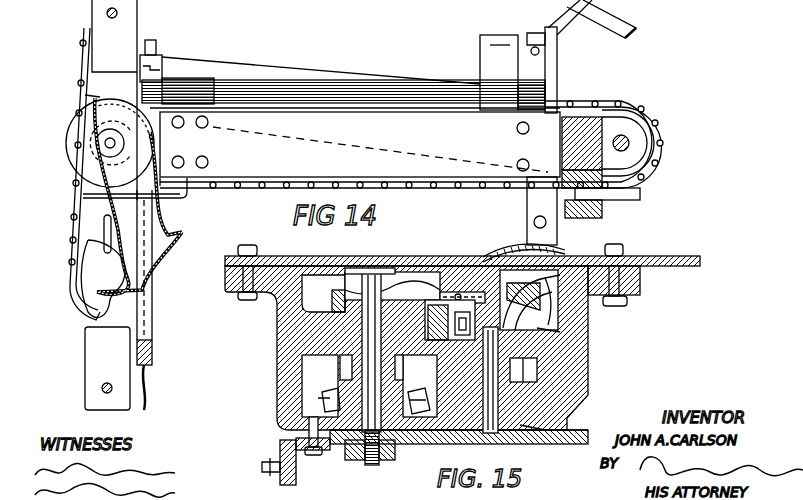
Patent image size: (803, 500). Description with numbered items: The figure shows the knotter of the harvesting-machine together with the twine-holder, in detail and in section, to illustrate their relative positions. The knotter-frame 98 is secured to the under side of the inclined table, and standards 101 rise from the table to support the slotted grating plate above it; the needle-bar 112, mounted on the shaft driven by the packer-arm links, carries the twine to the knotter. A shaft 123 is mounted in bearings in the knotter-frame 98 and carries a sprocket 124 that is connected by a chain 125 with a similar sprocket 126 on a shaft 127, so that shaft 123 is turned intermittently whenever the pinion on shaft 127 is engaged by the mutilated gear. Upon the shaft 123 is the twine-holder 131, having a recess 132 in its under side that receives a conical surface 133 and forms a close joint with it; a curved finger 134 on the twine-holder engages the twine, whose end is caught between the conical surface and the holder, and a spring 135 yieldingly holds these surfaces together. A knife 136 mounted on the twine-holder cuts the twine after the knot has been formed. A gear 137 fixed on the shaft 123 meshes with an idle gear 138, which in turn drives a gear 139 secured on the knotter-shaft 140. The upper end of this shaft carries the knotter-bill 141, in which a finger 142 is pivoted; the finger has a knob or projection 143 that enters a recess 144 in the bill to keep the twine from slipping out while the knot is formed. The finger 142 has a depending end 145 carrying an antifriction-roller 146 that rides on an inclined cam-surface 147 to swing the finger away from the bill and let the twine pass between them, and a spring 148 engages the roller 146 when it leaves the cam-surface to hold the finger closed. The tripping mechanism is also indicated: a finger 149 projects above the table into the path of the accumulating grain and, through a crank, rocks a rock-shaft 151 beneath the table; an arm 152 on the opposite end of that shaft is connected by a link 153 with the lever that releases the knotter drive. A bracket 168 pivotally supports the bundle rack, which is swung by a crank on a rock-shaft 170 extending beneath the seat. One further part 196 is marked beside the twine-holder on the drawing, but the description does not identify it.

In FIG. 14, the knotter-frame 98 is at (123, 35).
In FIG. 14, the standards 101 is at (562, 140).
In FIG. 14, the needle-bar 112 is at (144, 305).
In FIG. 15, the shaft 123 is at (364, 458).
In FIG. 15, the sprocket 124 is at (338, 405).
In FIG. 14, the chain 125 is at (262, 188).
In FIG. 14, the sprocket 126 is at (653, 137).
In FIG. 14, the shaft 127 is at (628, 140).
In FIG. 14, the twine-holder 131 is at (110, 143).
In FIG. 15, the twine-holder 131 is at (277, 338).
In FIG. 15, the recess 132 is at (372, 256).
In FIG. 15, the conical surface 133 is at (450, 296).
In FIG. 14, the curved finger 134 is at (78, 173).
In FIG. 15, the curved finger 134 is at (425, 298).
In FIG. 15, the spring 135 is at (405, 445).
In FIG. 15, the knife 136 is at (323, 293).
In FIG. 15, the gear 137 is at (345, 373).
In FIG. 15, the idle gear 138 is at (448, 382).
In FIG. 15, the gear 139 is at (587, 362).
In FIG. 15, the knotter-shaft 140 is at (523, 427).
In FIG. 14, the knotter-bill 141 is at (100, 309).
In FIG. 15, the finger 142 is at (587, 313).
In FIG. 15, the knob or projection 143 is at (610, 247).
In FIG. 15, the recess 144 is at (560, 266).
In FIG. 14, the depending end 145 is at (160, 218).
In FIG. 15, the depending end 145 is at (490, 255).
In FIG. 14, the antifriction-roller 146 is at (104, 219).
In FIG. 15, the antifriction-roller 146 is at (560, 332).
In FIG. 15, the inclined cam-surface 147 is at (627, 345).
In FIG. 14, the spring 148 is at (80, 243).
In FIG. 14, the finger 149 is at (156, 50).
In FIG. 14, the rock-shaft 151 is at (300, 97).
In FIG. 14, the arm 152 is at (552, 65).
In FIG. 14, the link 153 is at (545, 40).
In FIG. 14, the bracket 168 is at (612, 15).
In FIG. 14, the rock-shaft 170 is at (622, 197).
In FIG. 14, the cam 196 is at (105, 84).